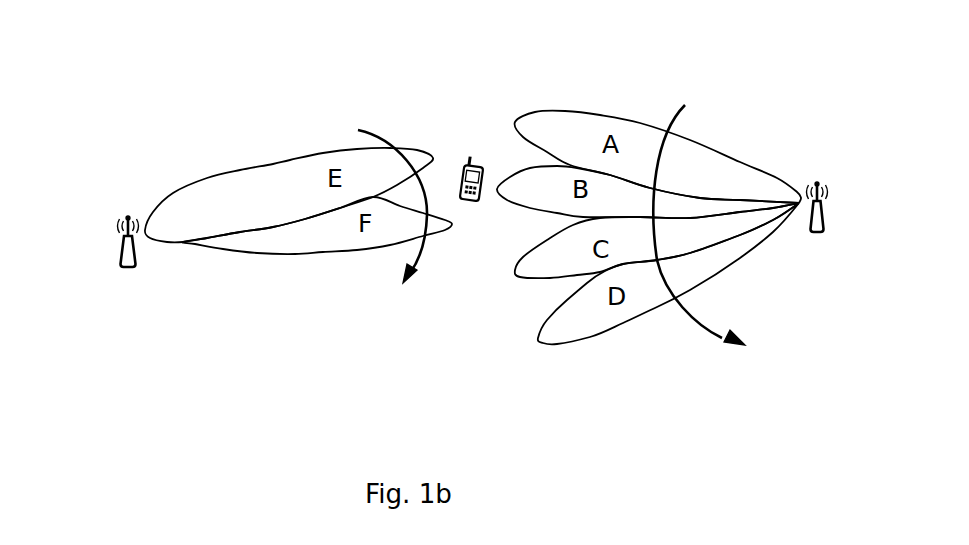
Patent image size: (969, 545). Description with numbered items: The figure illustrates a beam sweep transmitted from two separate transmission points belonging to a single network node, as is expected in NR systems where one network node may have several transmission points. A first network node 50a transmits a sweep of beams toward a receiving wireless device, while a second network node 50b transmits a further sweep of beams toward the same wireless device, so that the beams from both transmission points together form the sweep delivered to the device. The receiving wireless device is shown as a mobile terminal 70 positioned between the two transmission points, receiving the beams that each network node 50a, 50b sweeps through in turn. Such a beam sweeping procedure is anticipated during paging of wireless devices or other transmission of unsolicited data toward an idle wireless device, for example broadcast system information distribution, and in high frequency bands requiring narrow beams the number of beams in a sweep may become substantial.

The first network node 50a is at (118, 247).
The second network node 50b is at (827, 212).
The mobile terminal 70 is at (462, 168).